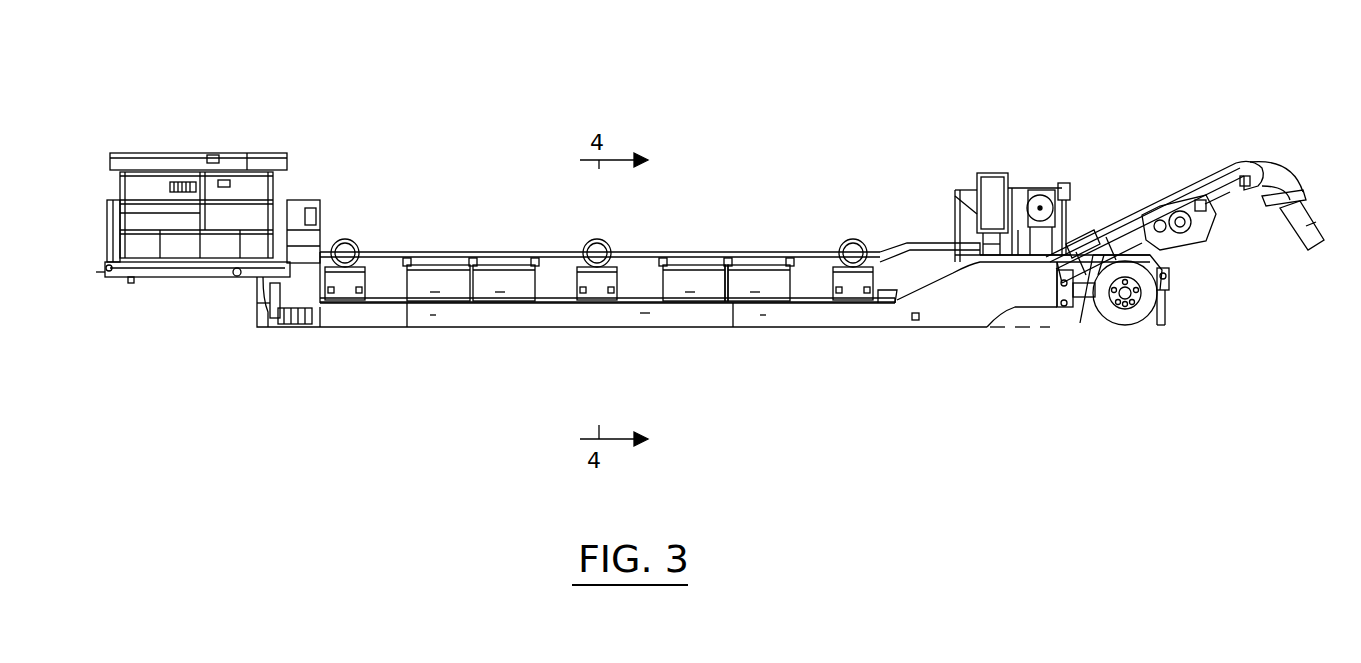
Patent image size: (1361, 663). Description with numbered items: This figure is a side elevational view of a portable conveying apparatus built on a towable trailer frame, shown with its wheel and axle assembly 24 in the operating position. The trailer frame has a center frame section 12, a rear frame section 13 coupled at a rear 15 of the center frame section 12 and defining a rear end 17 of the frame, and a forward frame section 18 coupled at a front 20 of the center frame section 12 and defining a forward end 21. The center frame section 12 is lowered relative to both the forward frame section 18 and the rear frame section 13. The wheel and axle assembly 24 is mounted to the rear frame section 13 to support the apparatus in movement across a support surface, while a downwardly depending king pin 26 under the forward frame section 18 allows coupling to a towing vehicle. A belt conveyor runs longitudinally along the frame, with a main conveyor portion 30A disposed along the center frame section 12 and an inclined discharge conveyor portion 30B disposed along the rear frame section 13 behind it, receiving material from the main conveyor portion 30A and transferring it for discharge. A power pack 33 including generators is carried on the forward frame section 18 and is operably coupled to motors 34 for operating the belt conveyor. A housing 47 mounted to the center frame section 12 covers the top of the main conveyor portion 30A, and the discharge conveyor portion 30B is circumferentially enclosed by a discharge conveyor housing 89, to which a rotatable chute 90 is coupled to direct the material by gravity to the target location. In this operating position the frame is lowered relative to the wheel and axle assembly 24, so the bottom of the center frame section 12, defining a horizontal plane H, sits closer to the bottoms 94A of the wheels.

The center frame section 12 is at (433, 326).
The rear frame section 13 is at (1015, 318).
The rear 15 is at (904, 335).
The rear end 17 is at (1170, 278).
The forward frame section 18 is at (210, 286).
The front 20 is at (300, 334).
The forward end 21 is at (108, 277).
The wheel and axle assembly 24 is at (1147, 328).
The king pin 26 is at (132, 285).
The main conveyor portion 30A is at (545, 316).
The inclined discharge conveyor portion 30B is at (1133, 195).
The power pack 33 is at (241, 152).
The motors 34 is at (996, 160).
The housing 47 is at (654, 292).
The discharge conveyor housing 89 is at (1168, 198).
The rotatable chute 90 is at (1294, 210).
The bottoms of the wheels 94A is at (1120, 330).
The horizontal plane H is at (996, 330).